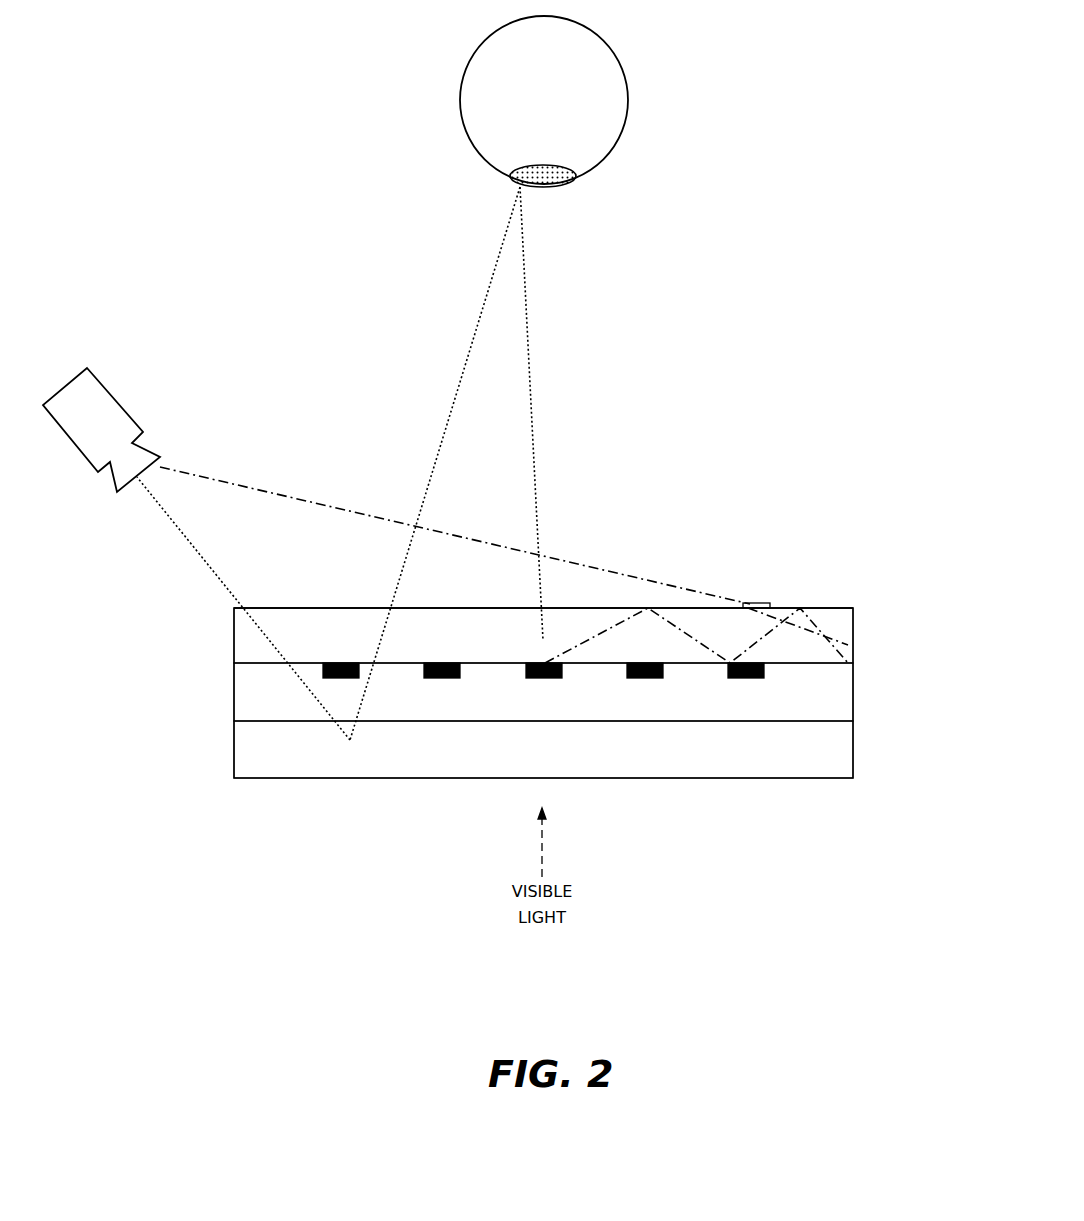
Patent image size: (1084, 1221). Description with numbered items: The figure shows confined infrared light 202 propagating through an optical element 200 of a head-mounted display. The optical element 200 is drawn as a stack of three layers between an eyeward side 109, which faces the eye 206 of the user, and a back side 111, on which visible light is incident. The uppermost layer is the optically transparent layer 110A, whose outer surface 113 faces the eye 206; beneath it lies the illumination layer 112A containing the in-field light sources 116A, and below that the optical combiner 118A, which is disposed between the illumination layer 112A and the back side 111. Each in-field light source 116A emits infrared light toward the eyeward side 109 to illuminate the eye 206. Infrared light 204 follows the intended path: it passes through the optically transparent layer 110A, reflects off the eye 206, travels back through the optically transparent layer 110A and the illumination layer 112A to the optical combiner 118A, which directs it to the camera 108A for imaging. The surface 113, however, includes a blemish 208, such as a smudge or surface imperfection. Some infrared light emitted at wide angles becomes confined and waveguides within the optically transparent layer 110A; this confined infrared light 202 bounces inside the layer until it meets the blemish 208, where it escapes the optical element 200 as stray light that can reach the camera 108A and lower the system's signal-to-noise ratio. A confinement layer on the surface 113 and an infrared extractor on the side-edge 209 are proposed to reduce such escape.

The optical element 200 is at (830, 451).
The eye 206 is at (617, 72).
The camera 108A is at (102, 392).
The eyeward side 109 is at (351, 602).
The back side 111 is at (345, 788).
The optically transparent layer 110A is at (847, 625).
The illumination layer 112A is at (850, 697).
The optical combiner 118A is at (850, 762).
The surface 113 is at (820, 608).
The in-field light source 116A is at (543, 640).
The confined infrared light 202 is at (574, 647).
The infrared light 204 is at (538, 641).
The blemish 208 is at (758, 603).
The side-edge 209 is at (234, 648).